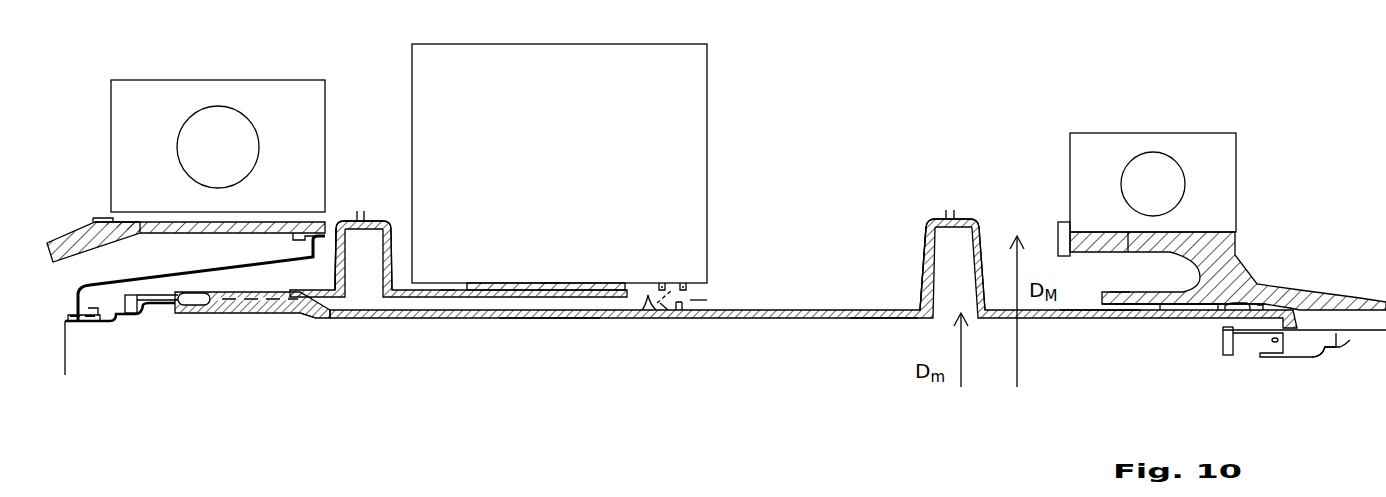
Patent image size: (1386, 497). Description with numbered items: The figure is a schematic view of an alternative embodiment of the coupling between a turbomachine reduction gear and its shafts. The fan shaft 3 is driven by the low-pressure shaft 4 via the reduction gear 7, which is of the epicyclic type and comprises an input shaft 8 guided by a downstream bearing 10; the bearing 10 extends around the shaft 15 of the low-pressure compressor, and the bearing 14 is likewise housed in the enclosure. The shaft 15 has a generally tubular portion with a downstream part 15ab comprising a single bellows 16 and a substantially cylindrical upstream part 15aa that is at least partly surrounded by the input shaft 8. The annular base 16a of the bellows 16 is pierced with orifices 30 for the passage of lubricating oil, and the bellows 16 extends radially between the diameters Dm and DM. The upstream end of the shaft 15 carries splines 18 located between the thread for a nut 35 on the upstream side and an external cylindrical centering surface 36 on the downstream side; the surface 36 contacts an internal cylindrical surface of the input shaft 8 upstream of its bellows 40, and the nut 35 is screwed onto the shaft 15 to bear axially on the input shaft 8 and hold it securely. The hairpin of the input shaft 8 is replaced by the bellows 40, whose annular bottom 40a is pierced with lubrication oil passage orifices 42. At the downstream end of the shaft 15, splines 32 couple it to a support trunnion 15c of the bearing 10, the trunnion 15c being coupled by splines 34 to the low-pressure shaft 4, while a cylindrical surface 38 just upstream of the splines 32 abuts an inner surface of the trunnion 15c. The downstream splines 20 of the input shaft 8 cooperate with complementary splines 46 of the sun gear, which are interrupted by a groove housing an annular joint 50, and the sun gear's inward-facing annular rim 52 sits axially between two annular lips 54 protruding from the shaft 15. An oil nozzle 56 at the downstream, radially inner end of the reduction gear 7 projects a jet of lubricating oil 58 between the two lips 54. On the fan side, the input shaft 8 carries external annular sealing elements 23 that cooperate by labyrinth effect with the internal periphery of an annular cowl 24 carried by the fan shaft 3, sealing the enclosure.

The fan shaft 3 is at (75, 241).
The low-pressure shaft 4 is at (1318, 347).
The reduction gear 7 is at (662, 116).
The input shaft 8 is at (405, 315).
The downstream bearing 10 is at (1219, 180).
The bearing 14 is at (152, 80).
The shaft 15 is at (1097, 338).
The upstream part 15aa is at (550, 318).
The downstream part 15ab is at (910, 319).
The support trunnion 15c is at (1238, 284).
The bellows 16 is at (972, 219).
The annular base 16a is at (930, 222).
The coupling splines 18 is at (230, 305).
The splines 20 is at (550, 282).
The external annular sealing elements 23 is at (84, 328).
The annular cowl 24 is at (212, 228).
The orifices 30 is at (947, 218).
The splines 32 is at (1200, 312).
The splines 34 is at (1357, 333).
The nut 35 is at (152, 300).
The external cylindrical centering surface 36 is at (306, 308).
The external cylindrical surface 38 is at (1120, 296).
The bellows 40 is at (393, 230).
The annular bottom 40a is at (338, 222).
The lubrication oil passage orifices 42 is at (360, 218).
The complementary splines 46 is at (497, 285).
The annular joint 50 is at (447, 290).
The annular rim 52 is at (662, 283).
The annular lips 54 is at (646, 303).
The oil nozzle 56 is at (694, 300).
The jet of lubricating oil 58 is at (663, 312).